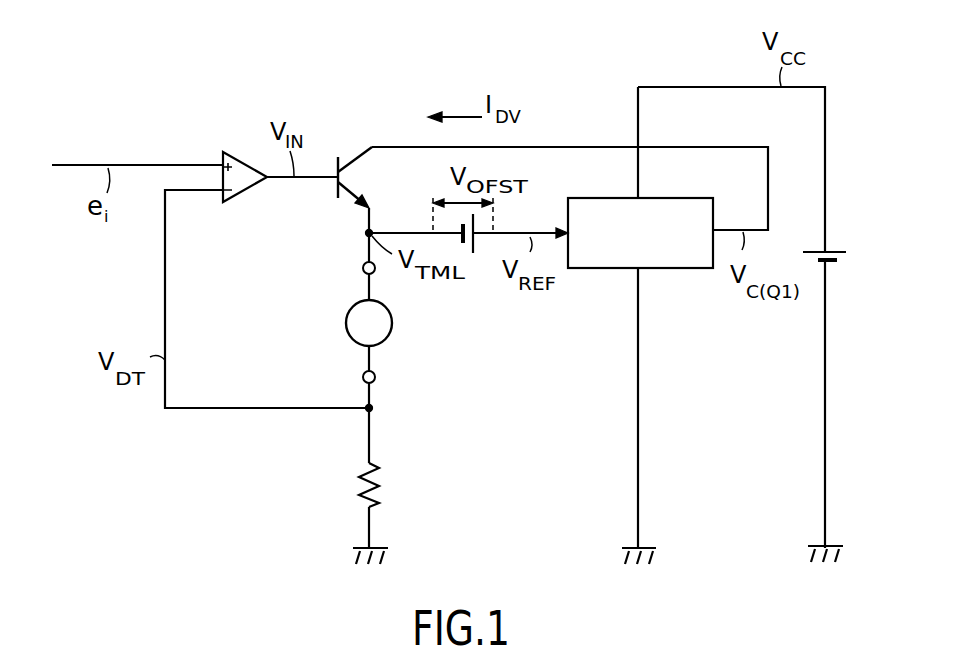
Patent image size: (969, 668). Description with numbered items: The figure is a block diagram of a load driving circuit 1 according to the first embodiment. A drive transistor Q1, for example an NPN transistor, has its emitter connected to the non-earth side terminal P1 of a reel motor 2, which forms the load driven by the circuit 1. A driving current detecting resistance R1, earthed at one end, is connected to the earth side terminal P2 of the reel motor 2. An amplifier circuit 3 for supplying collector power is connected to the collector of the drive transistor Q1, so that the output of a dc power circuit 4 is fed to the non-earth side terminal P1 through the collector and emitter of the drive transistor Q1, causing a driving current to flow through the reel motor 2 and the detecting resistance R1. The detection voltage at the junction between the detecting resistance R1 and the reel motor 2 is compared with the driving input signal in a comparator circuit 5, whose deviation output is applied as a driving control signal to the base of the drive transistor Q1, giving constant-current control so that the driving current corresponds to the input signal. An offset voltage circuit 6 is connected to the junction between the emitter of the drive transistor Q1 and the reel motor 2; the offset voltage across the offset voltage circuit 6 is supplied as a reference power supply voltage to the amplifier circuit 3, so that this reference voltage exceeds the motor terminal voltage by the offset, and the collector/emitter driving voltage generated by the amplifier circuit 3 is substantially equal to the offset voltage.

The load driving circuit 1 is at (138, 72).
The reel motor 2 is at (392, 323).
The amplifier circuit for supplying collector power 3 is at (700, 270).
The dc power circuit 4 is at (826, 263).
The comparator circuit 5 is at (243, 200).
The offset voltage circuit 6 is at (476, 256).
The drive transistor Q1 is at (338, 157).
The non-earth side terminal P1 is at (375, 272).
The earth side terminal P2 is at (376, 381).
The driving current detecting resistance R1 is at (383, 493).